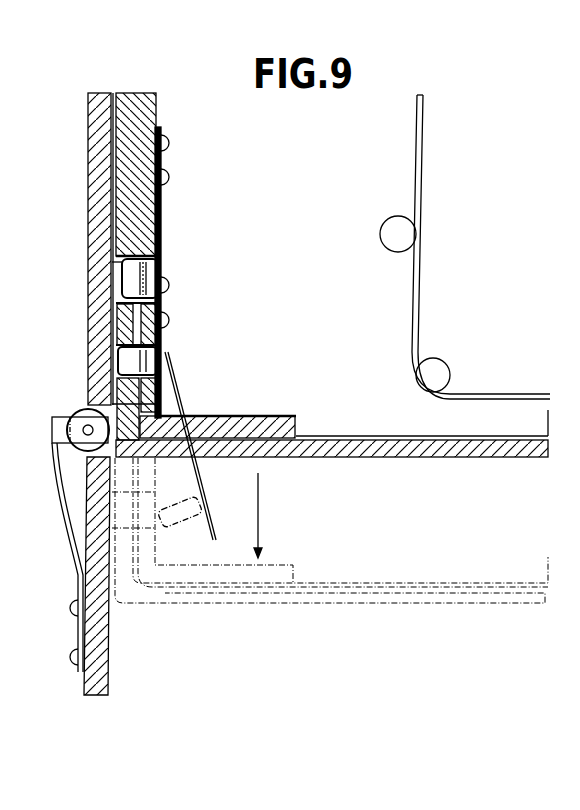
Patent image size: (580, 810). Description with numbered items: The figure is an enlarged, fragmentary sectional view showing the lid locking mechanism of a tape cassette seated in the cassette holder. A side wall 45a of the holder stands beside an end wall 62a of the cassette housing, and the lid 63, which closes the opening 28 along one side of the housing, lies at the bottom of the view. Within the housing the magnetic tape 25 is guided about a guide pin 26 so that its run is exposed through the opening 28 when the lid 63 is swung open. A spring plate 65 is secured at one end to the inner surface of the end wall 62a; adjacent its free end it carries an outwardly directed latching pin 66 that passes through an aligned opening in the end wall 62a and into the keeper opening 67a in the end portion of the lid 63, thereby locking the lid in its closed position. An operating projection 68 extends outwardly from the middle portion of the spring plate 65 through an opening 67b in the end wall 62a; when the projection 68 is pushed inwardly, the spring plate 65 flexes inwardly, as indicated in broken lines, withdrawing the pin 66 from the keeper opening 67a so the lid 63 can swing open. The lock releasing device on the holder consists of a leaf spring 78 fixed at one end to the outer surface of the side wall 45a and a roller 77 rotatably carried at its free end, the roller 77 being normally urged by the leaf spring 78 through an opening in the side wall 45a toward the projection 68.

The side wall 45a is at (89, 138).
The end wall 62a is at (116, 107).
The spring plate 65 is at (163, 229).
The opening 67b is at (118, 262).
The operating projection 68 is at (150, 272).
The keeper opening 67a is at (118, 349).
The latching pin 66 is at (148, 360).
The roller 77 is at (76, 412).
The leaf spring 78 is at (63, 478).
The opening 28 is at (308, 440).
The lid 63 is at (437, 445).
The magnetic tape 25 is at (515, 394).
The guide pin 26 is at (440, 372).